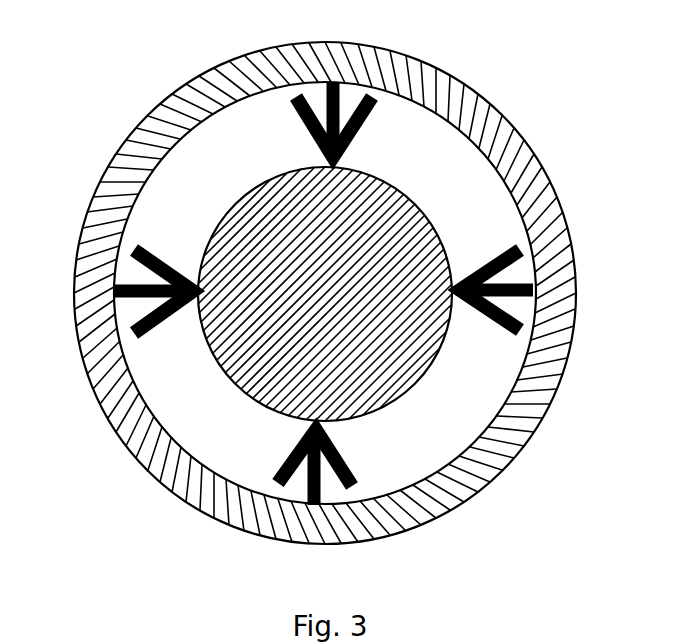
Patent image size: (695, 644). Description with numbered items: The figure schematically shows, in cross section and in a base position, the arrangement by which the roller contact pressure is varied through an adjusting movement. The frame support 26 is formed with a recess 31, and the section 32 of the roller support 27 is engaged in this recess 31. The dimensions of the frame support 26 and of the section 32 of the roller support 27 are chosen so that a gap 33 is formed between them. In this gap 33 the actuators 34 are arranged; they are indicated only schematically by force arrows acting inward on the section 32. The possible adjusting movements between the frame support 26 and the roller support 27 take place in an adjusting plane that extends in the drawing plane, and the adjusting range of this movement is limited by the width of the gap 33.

The frame support 26 is at (473, 107).
The roller support 27 is at (410, 342).
The recess 31 is at (460, 168).
The section of the roller support 32 is at (403, 385).
The gap 33 is at (190, 433).
The actuators 34 is at (322, 495).